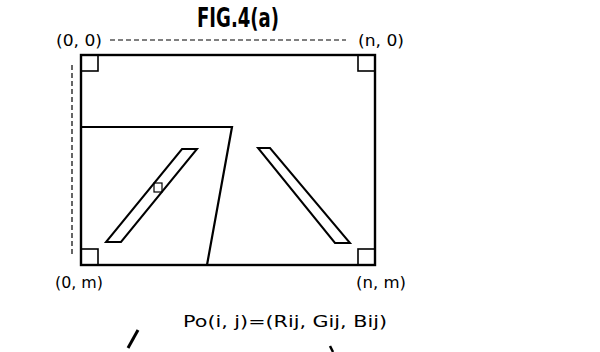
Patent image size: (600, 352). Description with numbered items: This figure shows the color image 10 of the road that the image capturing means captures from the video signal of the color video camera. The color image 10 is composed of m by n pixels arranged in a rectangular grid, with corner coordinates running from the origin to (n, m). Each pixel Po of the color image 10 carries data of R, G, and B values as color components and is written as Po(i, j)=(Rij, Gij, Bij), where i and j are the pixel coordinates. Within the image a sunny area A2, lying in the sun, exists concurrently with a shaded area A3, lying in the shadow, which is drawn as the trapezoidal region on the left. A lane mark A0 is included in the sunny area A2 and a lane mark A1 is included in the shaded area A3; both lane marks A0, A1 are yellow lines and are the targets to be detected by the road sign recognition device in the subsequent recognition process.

The color image 10 is at (375, 129).
The lane mark A0 is at (335, 235).
The lane mark A1 is at (132, 216).
The sunny area A2 is at (355, 113).
The shaded area A3 is at (96, 133).
The pixel Po is at (181, 318).